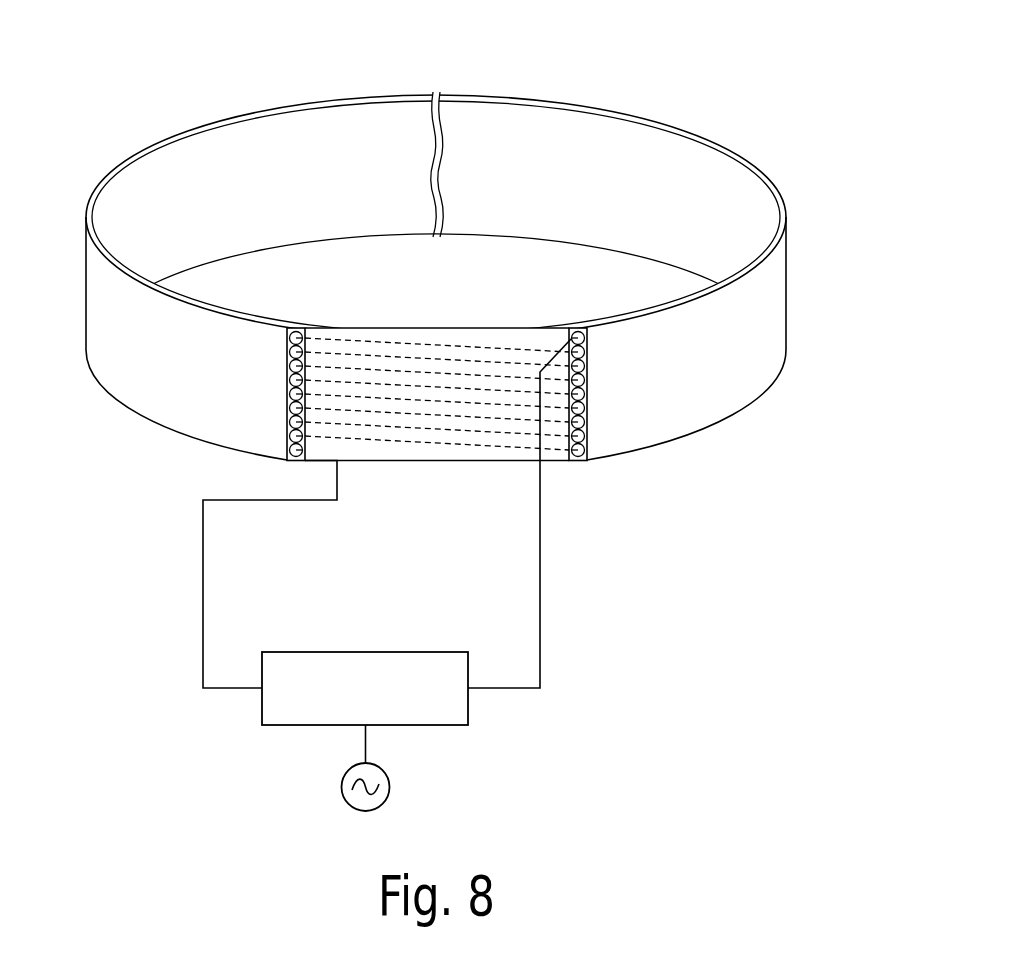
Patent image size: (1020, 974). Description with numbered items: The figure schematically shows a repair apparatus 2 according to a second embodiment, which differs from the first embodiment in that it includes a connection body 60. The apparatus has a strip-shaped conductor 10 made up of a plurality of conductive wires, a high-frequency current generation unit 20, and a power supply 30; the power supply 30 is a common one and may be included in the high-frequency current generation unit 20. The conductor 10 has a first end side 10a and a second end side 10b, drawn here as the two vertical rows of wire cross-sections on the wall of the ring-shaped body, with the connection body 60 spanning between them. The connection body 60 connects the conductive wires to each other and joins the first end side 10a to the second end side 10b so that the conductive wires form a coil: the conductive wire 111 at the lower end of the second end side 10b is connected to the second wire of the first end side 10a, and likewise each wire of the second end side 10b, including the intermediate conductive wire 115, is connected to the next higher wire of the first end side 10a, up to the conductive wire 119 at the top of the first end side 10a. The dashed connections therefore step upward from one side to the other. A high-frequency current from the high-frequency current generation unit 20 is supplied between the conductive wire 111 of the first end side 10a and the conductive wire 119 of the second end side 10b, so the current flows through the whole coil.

The repair apparatus 2 is at (633, 98).
The conductor 10 is at (402, 226).
The first end side 10a is at (297, 327).
The second end side 10b is at (578, 327).
The conductive wire 11_1 111 is at (612, 472).
The conductive wire 11_5 115 is at (611, 396).
The conductive wire 11_9 119 is at (305, 333).
The high-frequency current generation unit 20 is at (395, 652).
The power supply 30 is at (389, 782).
The connection body 60 is at (428, 453).